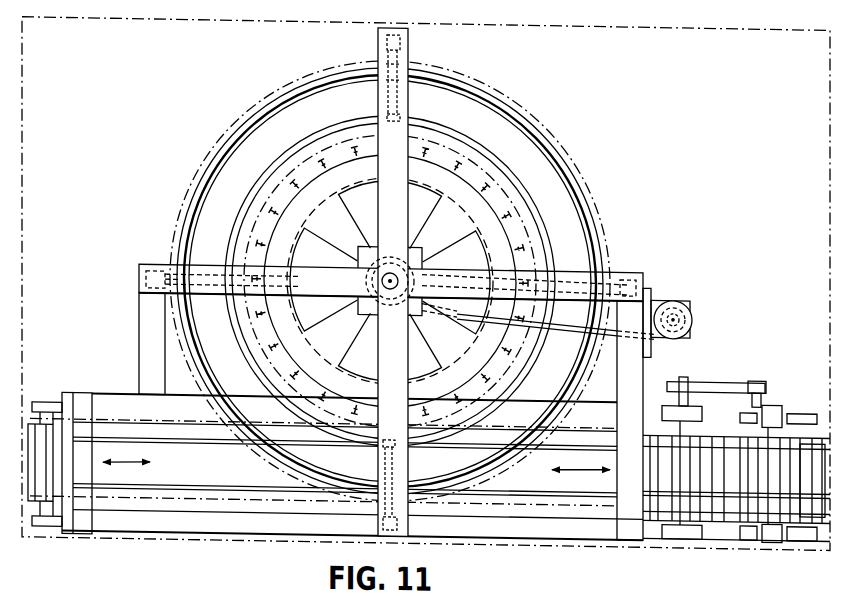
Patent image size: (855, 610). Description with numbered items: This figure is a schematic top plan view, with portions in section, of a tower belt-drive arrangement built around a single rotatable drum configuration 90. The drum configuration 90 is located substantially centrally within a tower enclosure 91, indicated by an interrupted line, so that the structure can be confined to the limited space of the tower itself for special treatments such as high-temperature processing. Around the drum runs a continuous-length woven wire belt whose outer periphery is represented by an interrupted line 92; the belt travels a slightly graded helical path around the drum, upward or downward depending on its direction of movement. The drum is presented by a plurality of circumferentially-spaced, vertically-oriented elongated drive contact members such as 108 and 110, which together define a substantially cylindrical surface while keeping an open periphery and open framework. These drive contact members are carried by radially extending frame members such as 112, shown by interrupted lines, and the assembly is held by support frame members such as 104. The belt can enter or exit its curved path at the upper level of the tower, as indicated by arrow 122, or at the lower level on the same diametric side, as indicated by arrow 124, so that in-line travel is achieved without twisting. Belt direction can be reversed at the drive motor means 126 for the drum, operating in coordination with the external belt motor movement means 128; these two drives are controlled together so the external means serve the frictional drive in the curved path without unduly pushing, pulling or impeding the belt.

The rotatable drum configuration 90 is at (497, 196).
The tower enclosure 91 is at (163, 544).
The continuous-length belt outer periphery 92 is at (608, 236).
The support frame member 104 is at (139, 292).
The drive contact member 108 is at (263, 332).
The drive contact member 110 is at (272, 367).
The radially extending frame member 112 is at (302, 191).
The arrow indicating belt entry or exit at upper level 122 is at (576, 468).
The arrow indicating belt entry or exit at lower level 124 is at (150, 466).
The drive motor means 126 is at (461, 259).
The external belt motor movement means 128 is at (785, 358).